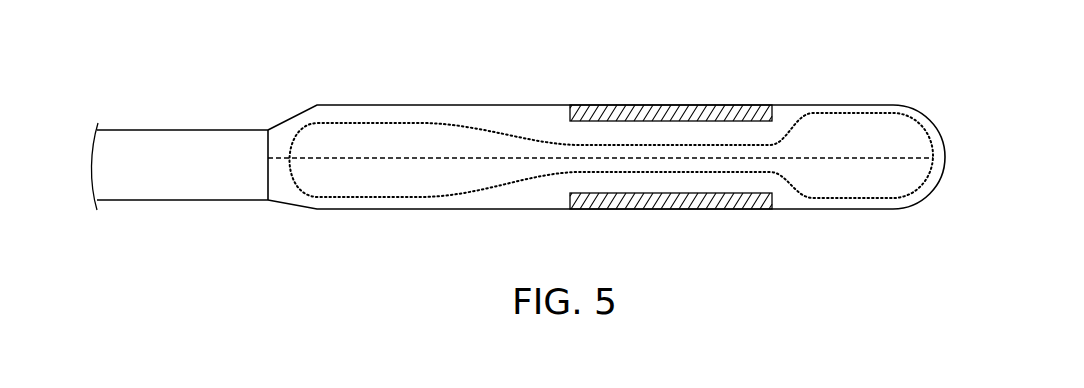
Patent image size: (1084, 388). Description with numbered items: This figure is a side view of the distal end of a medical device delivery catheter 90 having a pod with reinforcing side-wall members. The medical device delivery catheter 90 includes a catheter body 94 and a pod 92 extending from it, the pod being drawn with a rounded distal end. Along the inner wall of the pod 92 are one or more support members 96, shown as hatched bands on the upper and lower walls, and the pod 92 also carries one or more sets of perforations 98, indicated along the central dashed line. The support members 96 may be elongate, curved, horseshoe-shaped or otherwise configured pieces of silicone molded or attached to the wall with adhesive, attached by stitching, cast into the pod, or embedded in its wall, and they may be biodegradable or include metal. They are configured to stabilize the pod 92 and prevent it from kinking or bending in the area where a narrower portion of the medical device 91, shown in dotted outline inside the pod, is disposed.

The medical device delivery catheter 90 is at (521, 54).
The medical device 91 is at (799, 200).
The pod 92 is at (815, 99).
The catheter body 94 is at (210, 124).
The support members 96 is at (692, 104).
The perforations 98 is at (448, 166).